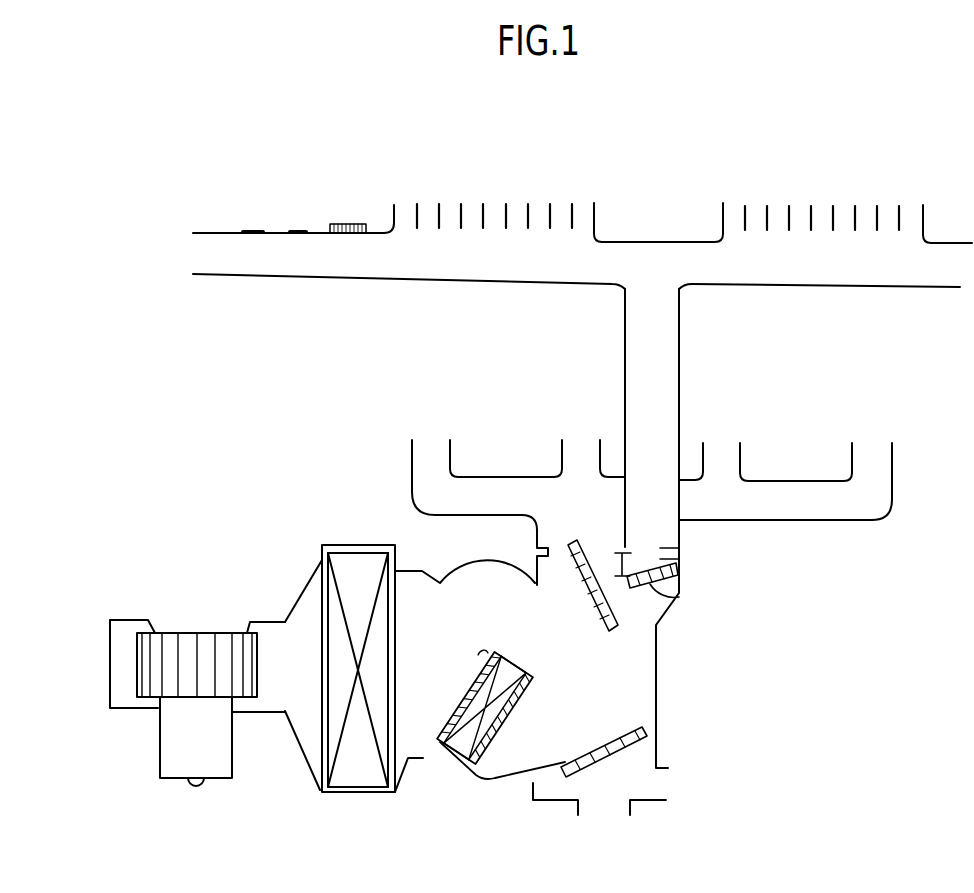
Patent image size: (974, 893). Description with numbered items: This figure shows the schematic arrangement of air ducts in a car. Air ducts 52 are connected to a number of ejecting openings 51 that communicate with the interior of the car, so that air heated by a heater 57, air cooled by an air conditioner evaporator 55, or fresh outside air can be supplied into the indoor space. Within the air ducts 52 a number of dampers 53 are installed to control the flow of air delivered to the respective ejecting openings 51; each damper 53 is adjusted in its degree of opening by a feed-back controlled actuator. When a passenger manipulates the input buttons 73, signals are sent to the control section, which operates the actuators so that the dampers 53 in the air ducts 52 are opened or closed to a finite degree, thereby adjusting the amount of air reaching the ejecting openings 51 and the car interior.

The ejecting openings 51 is at (494, 220).
The air ducts 52 is at (612, 697).
The dampers 53 is at (616, 622).
The air conditioner evaporator 55 is at (352, 767).
The heater 57 is at (447, 742).
The input buttons 73 is at (337, 225).